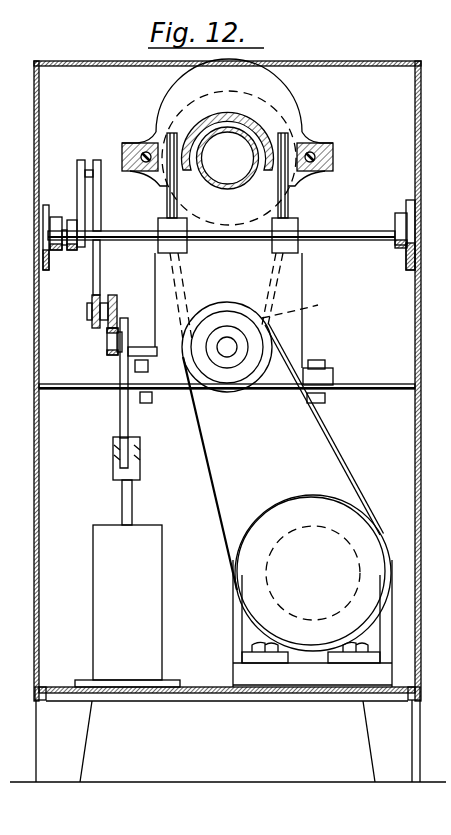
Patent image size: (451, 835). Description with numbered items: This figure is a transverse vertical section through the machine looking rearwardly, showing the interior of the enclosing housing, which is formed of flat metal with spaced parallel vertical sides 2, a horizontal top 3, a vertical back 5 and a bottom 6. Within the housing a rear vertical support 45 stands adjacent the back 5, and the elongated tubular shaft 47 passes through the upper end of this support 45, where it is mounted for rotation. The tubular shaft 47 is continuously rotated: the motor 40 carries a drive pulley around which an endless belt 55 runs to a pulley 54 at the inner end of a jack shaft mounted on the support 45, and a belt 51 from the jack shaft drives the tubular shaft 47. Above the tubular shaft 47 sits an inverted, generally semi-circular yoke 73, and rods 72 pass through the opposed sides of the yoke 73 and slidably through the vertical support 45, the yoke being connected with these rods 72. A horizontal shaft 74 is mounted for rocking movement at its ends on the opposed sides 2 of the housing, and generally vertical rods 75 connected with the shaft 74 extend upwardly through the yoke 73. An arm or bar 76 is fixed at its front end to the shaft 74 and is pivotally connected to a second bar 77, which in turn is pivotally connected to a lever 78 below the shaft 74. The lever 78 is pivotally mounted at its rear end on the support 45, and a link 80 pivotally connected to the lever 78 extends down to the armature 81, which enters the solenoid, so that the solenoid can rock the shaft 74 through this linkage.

The sides 2 is at (34, 335).
The top 3 is at (271, 61).
The back 5 is at (338, 84).
The bottom 6 is at (206, 693).
The motor 40 is at (322, 514).
The vertical support 45 is at (303, 270).
The tubular shaft 47 is at (224, 188).
The belt 51 is at (256, 296).
The pulley 54 is at (246, 393).
The endless belt 55 is at (314, 446).
The rods 72 is at (146, 152).
The yoke 73 is at (255, 120).
The horizontal shaft 74 is at (231, 243).
The vertical rods 75 is at (172, 180).
The arm or bar 76 is at (80, 206).
The second bar 77 is at (96, 260).
The lever 78 is at (107, 342).
The link 80 is at (120, 420).
The armature 81 is at (132, 500).